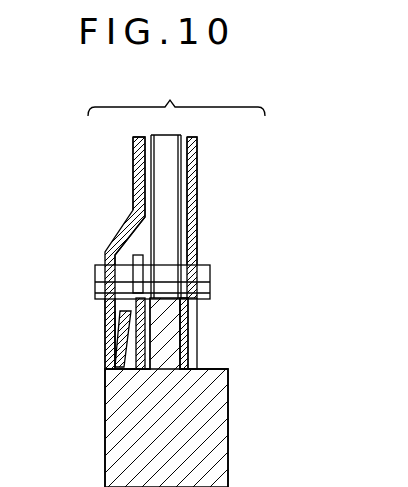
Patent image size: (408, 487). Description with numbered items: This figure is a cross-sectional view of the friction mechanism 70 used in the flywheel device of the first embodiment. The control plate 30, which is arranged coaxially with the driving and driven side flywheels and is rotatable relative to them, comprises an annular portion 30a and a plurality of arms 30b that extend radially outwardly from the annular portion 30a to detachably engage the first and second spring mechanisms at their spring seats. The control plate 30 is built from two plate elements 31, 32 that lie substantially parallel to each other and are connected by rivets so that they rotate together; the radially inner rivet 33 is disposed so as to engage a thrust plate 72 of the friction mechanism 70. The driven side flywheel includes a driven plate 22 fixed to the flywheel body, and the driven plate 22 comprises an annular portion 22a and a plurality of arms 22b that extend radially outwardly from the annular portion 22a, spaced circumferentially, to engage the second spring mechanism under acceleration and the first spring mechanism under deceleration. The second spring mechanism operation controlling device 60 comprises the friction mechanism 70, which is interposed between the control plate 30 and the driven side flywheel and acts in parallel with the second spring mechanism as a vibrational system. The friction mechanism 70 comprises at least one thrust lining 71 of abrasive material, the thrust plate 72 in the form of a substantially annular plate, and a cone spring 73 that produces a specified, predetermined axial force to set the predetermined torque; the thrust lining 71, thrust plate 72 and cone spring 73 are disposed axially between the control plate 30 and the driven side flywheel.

The control plate 30 is at (190, 97).
The plate element 31 is at (137, 136).
The plate element 32 is at (195, 136).
The annular portion 30a is at (110, 333).
The arms 30b is at (133, 159).
The rivet 33 is at (95, 279).
The driven plate 22 is at (234, 385).
The annular portion 22a is at (212, 412).
The arms 22b is at (165, 208).
The second spring mechanism operation controlling device 60 is at (198, 310).
The friction mechanism 70 is at (106, 344).
The thrust lining 71 is at (148, 333).
The thrust plate 72 is at (136, 369).
The cone spring 73 is at (128, 317).